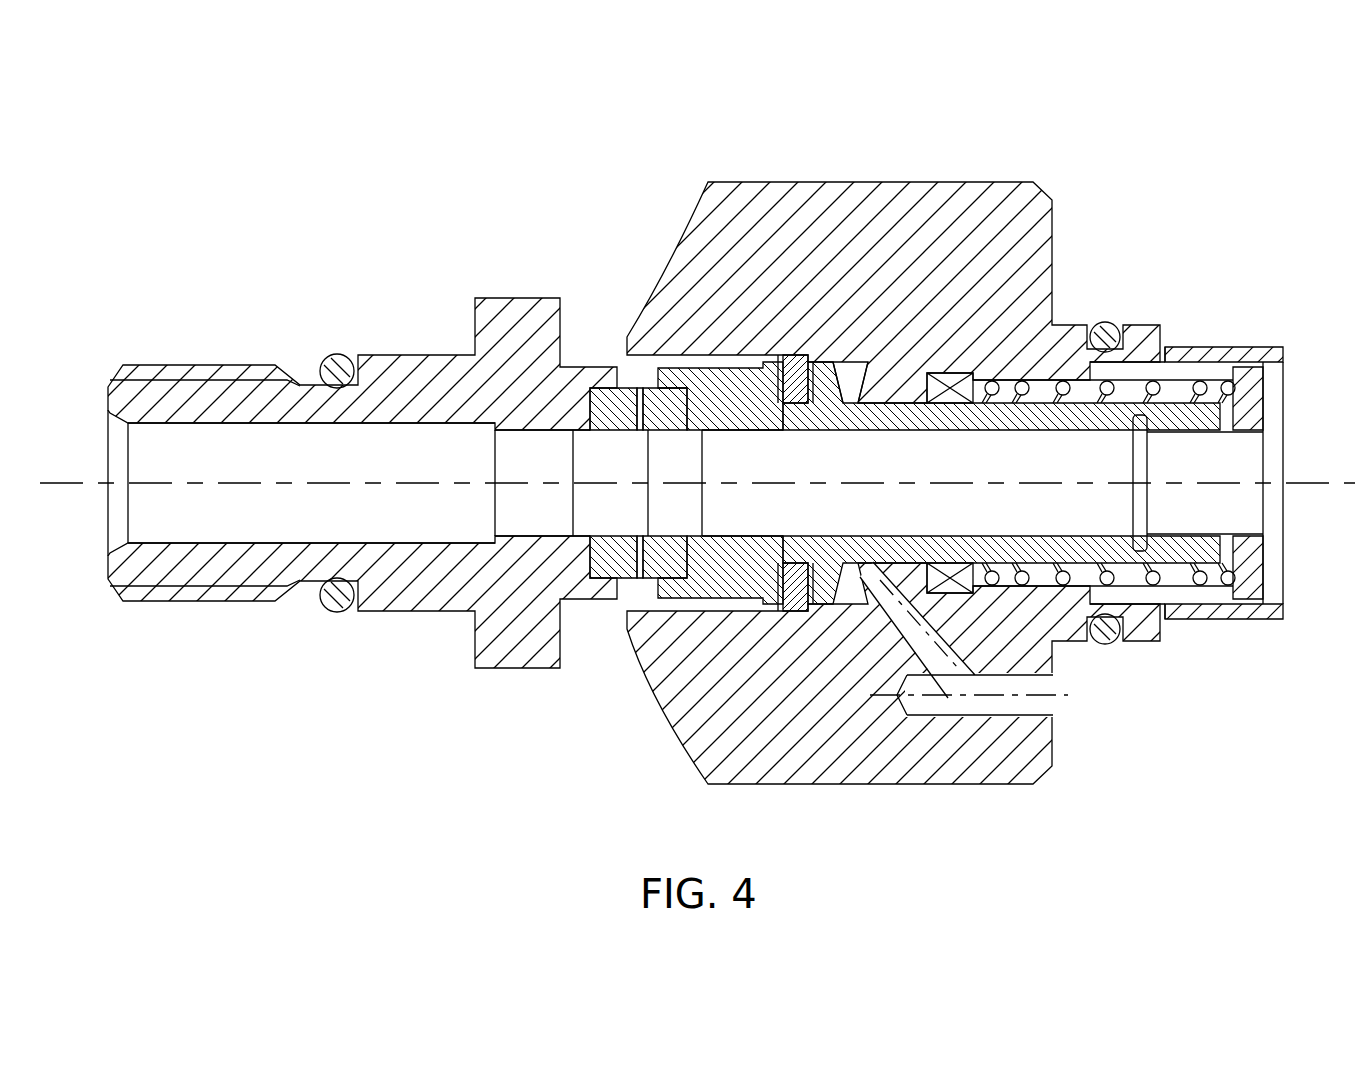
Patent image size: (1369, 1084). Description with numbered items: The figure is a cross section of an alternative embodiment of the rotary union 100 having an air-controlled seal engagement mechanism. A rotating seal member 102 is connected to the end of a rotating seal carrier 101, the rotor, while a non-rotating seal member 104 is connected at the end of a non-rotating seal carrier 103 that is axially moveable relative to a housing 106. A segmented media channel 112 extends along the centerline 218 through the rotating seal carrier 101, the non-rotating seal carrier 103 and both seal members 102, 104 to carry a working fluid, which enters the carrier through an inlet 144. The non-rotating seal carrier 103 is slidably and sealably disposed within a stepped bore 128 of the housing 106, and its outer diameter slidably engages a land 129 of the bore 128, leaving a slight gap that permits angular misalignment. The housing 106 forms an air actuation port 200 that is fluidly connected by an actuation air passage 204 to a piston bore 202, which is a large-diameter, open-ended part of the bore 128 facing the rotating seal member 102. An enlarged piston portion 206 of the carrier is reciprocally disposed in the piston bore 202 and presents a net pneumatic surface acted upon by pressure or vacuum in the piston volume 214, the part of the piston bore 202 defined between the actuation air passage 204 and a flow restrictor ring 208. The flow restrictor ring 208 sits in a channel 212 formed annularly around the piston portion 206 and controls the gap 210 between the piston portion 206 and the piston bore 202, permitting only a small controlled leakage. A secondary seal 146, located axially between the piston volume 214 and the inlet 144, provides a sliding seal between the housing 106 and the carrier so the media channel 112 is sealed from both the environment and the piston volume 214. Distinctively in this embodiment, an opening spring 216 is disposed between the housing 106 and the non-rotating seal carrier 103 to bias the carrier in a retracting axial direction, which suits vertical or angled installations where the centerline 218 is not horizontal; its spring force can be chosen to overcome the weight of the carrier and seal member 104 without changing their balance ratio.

The rotary union 100 is at (562, 148).
The rotating seal carrier 101 is at (394, 366).
The rotating seal member 102 is at (604, 388).
The non-rotating seal carrier 103 is at (1143, 345).
The non-rotating seal member 104 is at (651, 388).
The housing 106 is at (852, 186).
The media channel 112 is at (385, 524).
The bore 128 is at (950, 373).
The land 129 is at (883, 565).
The inlet 144 is at (1150, 497).
The secondary seal 146 is at (996, 362).
The air actuation port 200 is at (1056, 700).
The piston bore 202 is at (662, 372).
The actuation air passage 204 is at (949, 714).
The piston portion 206 is at (755, 603).
The flow restrictor ring 208 is at (797, 356).
The gap 210 is at (657, 688).
The channel 212 is at (790, 612).
The piston volume 214 is at (913, 352).
The opening spring 216 is at (1167, 578).
The centerline 218 is at (875, 483).